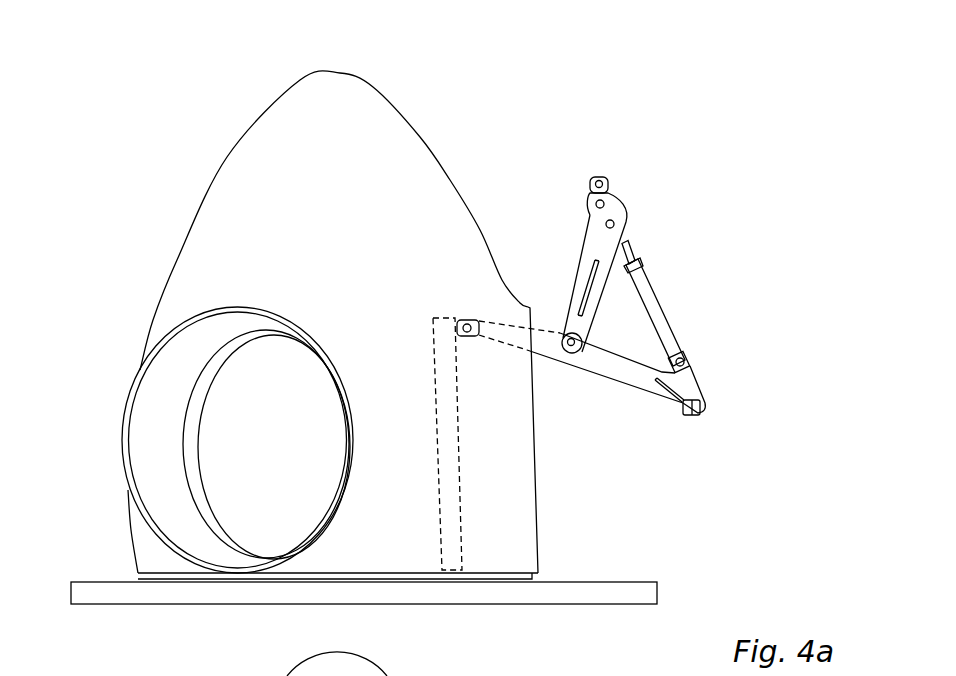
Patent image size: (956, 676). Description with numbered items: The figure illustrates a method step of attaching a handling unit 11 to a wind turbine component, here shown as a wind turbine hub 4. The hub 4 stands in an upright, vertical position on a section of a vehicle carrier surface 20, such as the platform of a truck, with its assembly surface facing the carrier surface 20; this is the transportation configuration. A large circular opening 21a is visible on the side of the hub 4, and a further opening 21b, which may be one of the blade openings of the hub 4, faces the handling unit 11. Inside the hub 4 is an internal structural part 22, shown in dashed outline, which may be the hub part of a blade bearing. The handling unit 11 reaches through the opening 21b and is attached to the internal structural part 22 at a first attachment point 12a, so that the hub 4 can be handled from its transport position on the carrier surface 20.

The wind turbine hub 4 is at (190, 138).
The handling unit 11 is at (712, 268).
The first attachment point 12a is at (458, 313).
The vehicle carrier surface 20 is at (287, 597).
The circular opening 21a is at (168, 375).
The opening 21b is at (535, 453).
The internal structural part 22 is at (445, 382).